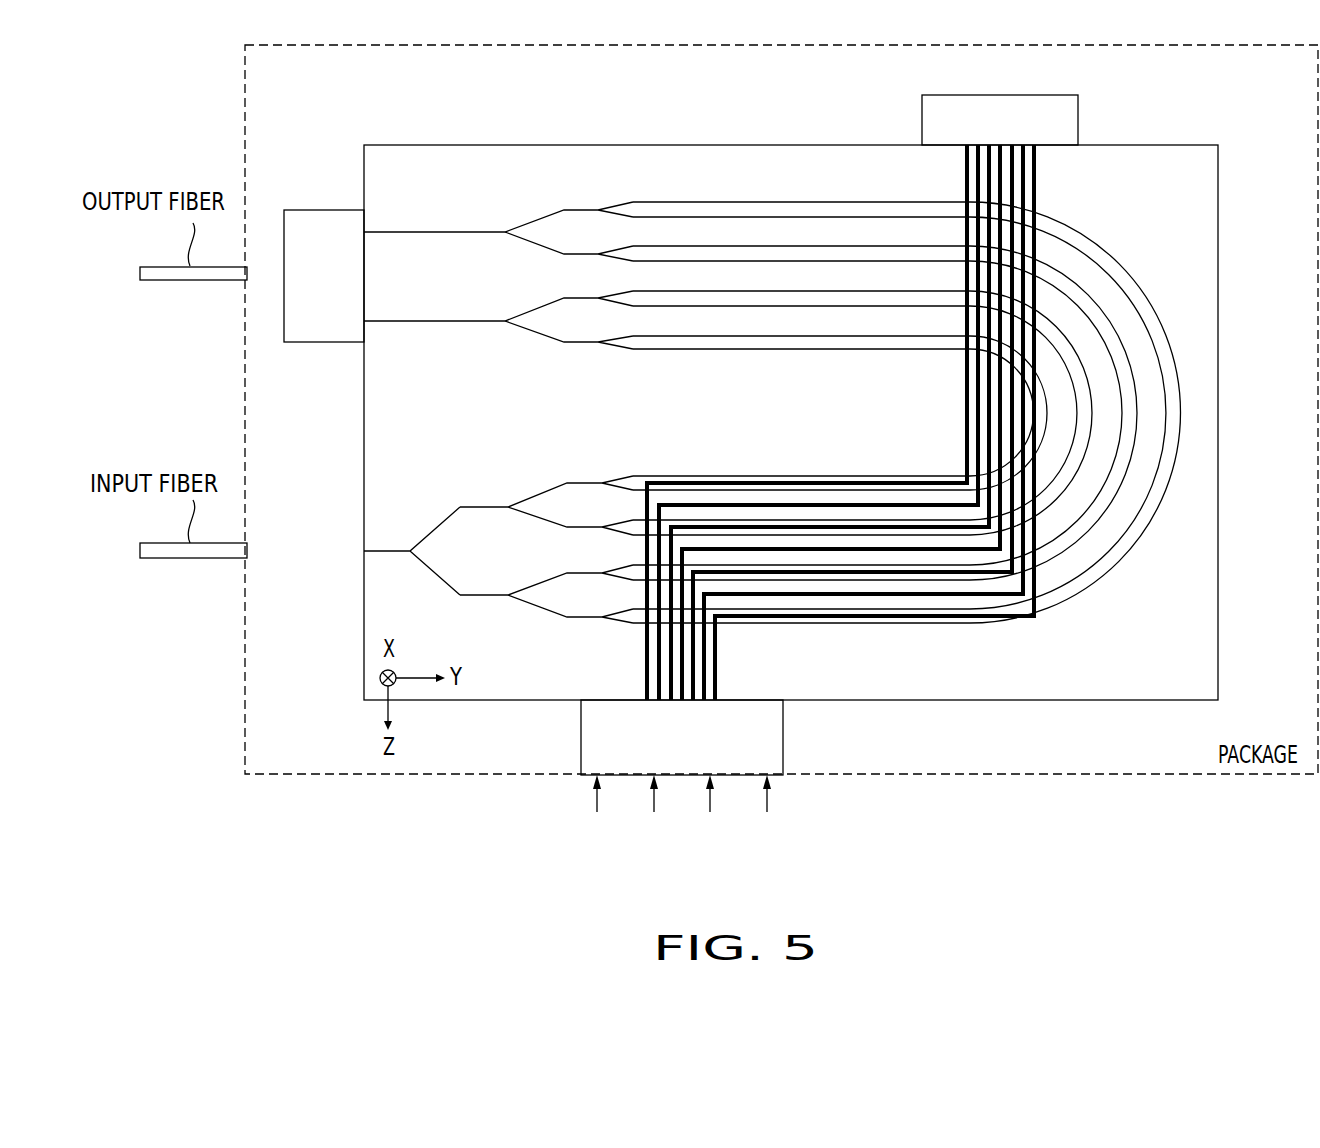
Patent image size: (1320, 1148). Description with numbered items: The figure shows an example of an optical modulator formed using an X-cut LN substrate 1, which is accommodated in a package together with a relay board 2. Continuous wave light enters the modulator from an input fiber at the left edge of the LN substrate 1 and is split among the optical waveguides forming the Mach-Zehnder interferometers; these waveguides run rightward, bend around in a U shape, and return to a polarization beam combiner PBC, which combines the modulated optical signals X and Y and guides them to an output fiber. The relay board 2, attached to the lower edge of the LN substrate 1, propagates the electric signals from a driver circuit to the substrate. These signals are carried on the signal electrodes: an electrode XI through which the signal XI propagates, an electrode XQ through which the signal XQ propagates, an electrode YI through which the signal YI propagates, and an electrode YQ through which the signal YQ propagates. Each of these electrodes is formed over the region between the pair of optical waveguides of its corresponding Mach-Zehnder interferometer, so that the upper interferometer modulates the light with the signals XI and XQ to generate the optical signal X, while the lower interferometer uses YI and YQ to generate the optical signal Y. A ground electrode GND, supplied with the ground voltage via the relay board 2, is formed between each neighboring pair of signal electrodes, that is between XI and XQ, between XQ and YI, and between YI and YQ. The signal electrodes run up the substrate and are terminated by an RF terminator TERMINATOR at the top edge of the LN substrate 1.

The LN substrate 1 is at (791, 384).
The relay board 2 is at (787, 733).
The polarization beam combiner PBC is at (324, 276).
The RF terminator TERMINATOR is at (1000, 120).
The electrode XI is at (630, 480).
The electrode XQ is at (627, 523).
The electrode YI is at (627, 568).
The electrode YQ is at (627, 612).
The ground electrode GND is at (835, 502).